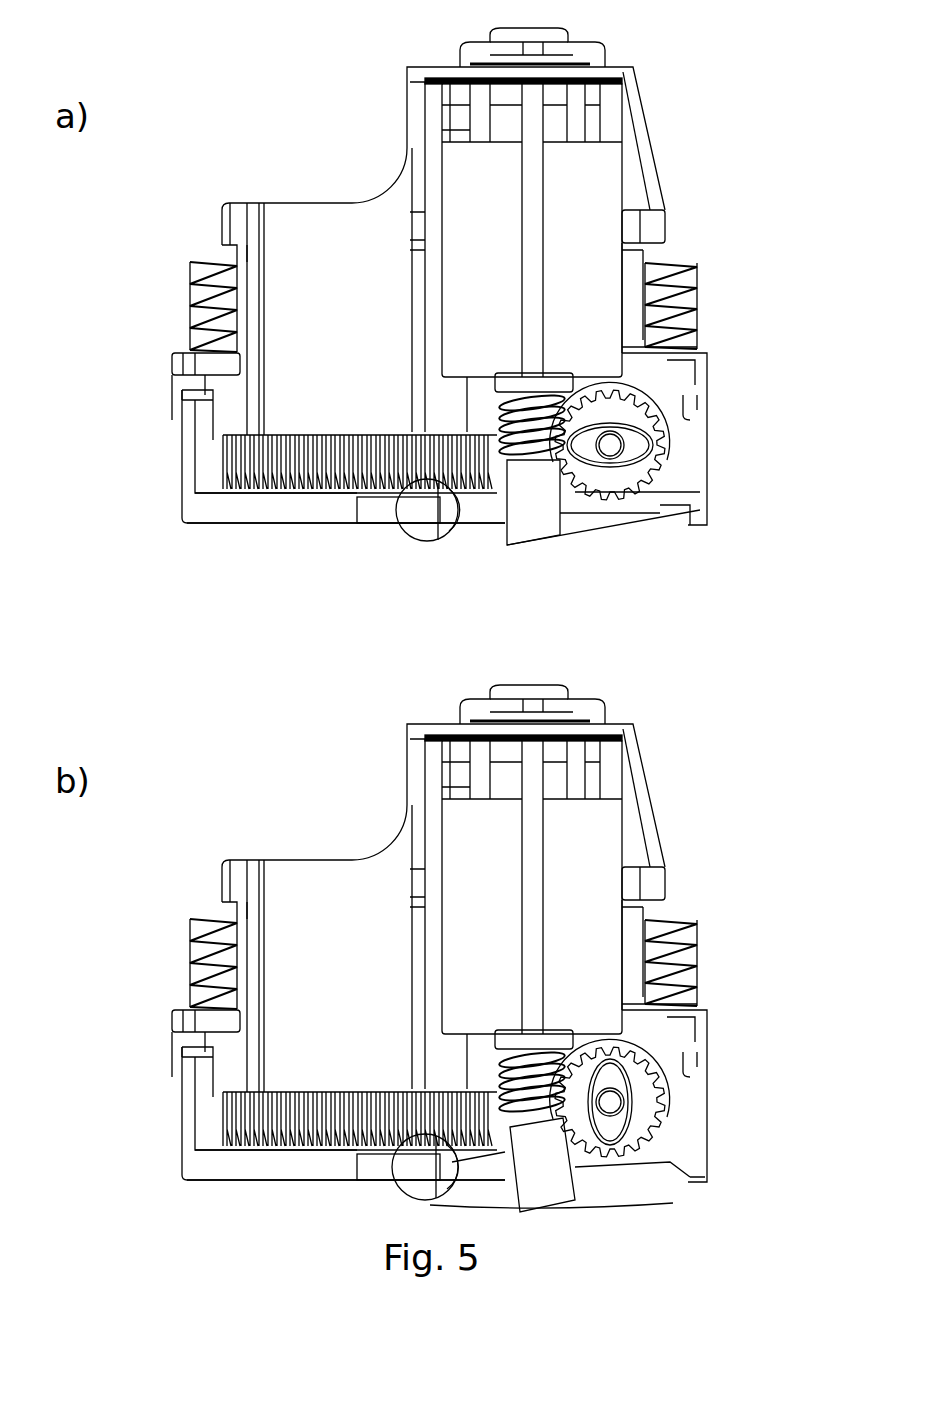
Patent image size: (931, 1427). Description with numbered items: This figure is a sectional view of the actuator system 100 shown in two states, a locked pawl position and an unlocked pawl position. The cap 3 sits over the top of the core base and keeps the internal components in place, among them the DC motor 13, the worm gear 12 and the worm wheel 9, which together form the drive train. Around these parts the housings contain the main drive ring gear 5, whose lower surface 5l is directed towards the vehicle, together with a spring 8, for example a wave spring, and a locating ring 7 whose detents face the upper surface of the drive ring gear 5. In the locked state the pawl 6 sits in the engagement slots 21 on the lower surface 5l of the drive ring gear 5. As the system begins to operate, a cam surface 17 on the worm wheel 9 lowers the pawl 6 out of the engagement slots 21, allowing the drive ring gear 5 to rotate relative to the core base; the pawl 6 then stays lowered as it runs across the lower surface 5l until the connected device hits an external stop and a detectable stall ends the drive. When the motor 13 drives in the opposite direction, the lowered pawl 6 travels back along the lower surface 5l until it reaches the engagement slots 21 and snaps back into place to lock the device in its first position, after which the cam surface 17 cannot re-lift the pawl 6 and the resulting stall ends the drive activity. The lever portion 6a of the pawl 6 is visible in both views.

The actuator system 100 is at (205, 145).
The cap 3 is at (330, 246).
The DC motor 13 is at (596, 173).
The worm gear 12 is at (544, 396).
The worm wheel 9 is at (648, 404).
The spring 8 is at (186, 293).
The locating ring 7 is at (169, 377).
The main drive ring gear 5 is at (176, 497).
The lower surface 5l is at (260, 533).
The engagement slots 21 is at (378, 533).
The pawl 6 is at (443, 548).
The lever arm 6a is at (678, 509).
The cam surface 17 is at (630, 453).